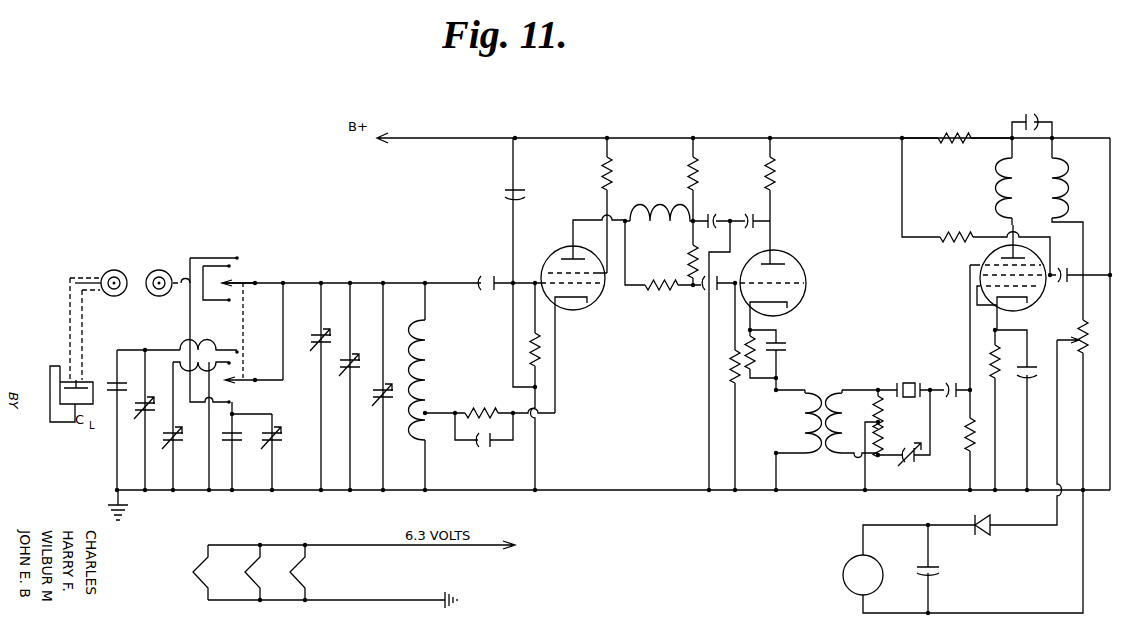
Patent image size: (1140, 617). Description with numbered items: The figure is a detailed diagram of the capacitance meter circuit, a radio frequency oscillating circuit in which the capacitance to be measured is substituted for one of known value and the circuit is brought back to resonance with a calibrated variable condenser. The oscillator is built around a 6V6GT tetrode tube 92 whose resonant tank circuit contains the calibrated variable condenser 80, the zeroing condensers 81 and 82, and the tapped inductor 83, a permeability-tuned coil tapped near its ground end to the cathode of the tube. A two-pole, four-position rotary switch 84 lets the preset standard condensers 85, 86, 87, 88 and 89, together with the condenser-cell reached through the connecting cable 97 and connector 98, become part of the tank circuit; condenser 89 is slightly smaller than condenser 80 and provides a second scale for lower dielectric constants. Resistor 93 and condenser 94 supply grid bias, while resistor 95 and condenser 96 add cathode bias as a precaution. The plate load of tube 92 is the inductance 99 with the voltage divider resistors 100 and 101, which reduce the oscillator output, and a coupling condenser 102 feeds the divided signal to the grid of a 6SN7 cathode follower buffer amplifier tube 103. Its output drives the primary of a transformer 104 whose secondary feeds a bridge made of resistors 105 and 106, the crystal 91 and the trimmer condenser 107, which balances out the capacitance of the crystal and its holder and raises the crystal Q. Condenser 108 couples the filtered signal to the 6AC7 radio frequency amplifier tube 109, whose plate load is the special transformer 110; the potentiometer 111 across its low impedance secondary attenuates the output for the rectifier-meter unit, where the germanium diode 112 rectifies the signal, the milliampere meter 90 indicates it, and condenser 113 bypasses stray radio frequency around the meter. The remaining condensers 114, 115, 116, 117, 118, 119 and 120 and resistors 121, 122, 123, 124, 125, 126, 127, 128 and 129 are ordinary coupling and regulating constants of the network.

The calibrated variable condenser 80 is at (314, 340).
The zeroing condenser 81 is at (344, 375).
The zeroing condenser 82 is at (374, 401).
The tapped inductor 83 is at (427, 371).
The four-position rotary switch 84 is at (243, 284).
The condenser 85 is at (238, 446).
The condenser 86 is at (285, 432).
The condenser 87 is at (140, 417).
The condenser 88 is at (110, 383).
The condenser 89 is at (176, 439).
The milliampere meter 90 is at (843, 577).
The crystal 91 is at (902, 386).
The tetrode tube 92 is at (548, 256).
The resistor 93 is at (538, 344).
The condenser 94 is at (481, 277).
The resistor 95 is at (490, 402).
The condenser 96 is at (490, 448).
The connecting cable 97 is at (100, 278).
The connector 98 is at (146, 276).
The inductance 99 is at (636, 210).
The voltage divider resistor 100 is at (666, 285).
The voltage divider resistor 101 is at (690, 252).
The coupling condenser 102 is at (714, 292).
The cathode follower buffer amplifier tube 103 is at (801, 266).
The transformer 104 is at (822, 392).
The resistor 105 is at (882, 408).
The resistor 106 is at (882, 433).
The condenser 107 is at (920, 466).
The condenser 108 is at (948, 386).
The tube 109 is at (982, 265).
The transformer 110 is at (1006, 184).
The potentiometer 111 is at (1088, 345).
The germanium diode 112 is at (984, 536).
The condenser 113 is at (939, 571).
The condenser 114 is at (506, 194).
The condenser 115 is at (711, 214).
The condenser 116 is at (747, 214).
The condenser 117 is at (789, 346).
The condenser 118 is at (1062, 283).
The condenser 119 is at (1033, 368).
The condenser 120 is at (1036, 120).
The resistor 121 is at (611, 167).
The resistor 122 is at (697, 167).
The resistor 123 is at (733, 352).
The resistor 124 is at (765, 336).
The resistor 125 is at (774, 167).
The resistor 126 is at (969, 446).
The resistor 127 is at (999, 392).
The resistor 128 is at (952, 237).
The resistor 129 is at (957, 129).